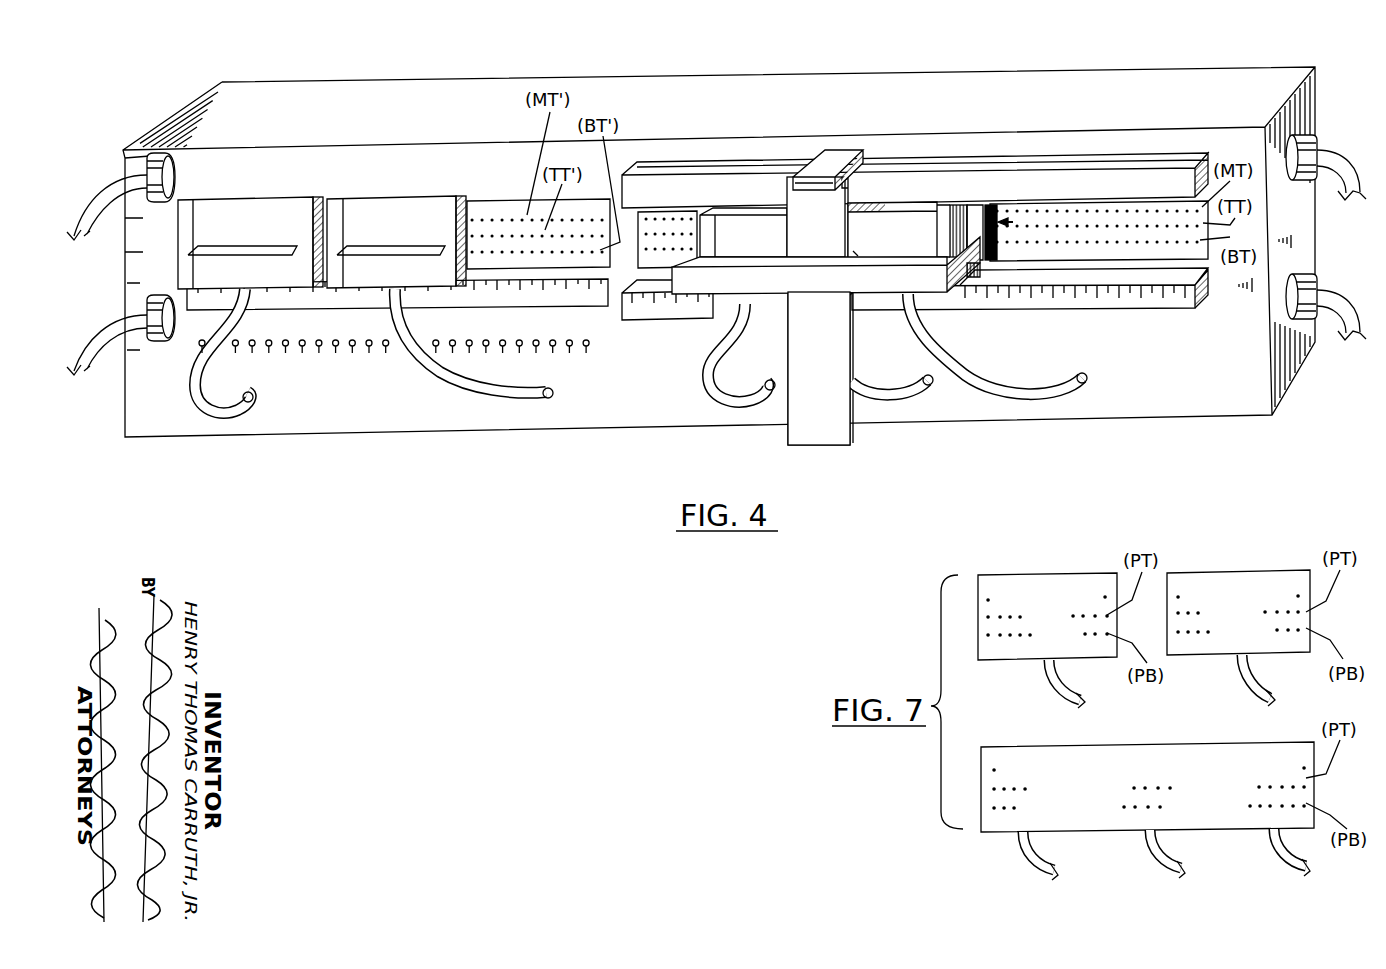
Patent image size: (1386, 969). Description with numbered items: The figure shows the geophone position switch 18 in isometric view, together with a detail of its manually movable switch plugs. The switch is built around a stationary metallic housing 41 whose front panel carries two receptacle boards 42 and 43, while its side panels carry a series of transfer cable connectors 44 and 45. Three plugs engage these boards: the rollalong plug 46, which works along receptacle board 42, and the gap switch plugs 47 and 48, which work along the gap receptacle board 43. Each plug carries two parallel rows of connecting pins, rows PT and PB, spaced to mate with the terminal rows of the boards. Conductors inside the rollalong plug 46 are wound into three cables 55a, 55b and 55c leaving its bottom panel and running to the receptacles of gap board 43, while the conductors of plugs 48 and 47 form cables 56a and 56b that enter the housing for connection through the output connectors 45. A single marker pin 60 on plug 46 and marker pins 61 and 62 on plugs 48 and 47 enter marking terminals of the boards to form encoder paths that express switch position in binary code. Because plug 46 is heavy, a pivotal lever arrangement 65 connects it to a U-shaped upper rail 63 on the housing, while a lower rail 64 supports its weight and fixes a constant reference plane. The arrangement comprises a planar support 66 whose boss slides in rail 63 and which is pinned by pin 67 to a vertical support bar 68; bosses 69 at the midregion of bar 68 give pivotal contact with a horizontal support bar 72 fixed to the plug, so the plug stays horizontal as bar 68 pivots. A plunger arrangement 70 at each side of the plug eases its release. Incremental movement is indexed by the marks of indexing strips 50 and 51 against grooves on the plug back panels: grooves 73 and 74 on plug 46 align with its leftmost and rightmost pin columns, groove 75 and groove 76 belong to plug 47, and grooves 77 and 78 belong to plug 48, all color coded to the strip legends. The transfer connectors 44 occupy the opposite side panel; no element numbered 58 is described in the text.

In FIG. 4, the geophone position switch 18 is at (1333, 100).
In FIG. 4, the stationary metallic housing 41 is at (1255, 280).
In FIG. 4, the receptacle board 42 is at (1095, 217).
In FIG. 4, the gap receptacle board 43 is at (495, 210).
In FIG. 4, the transfer cable connector 44 is at (1303, 172).
In FIG. 4, the transfer cable connector 45 is at (157, 170).
In FIG. 4, the rollalong plug 46 is at (885, 227).
In FIG. 7, the rollalong plug 46 is at (1129, 742).
In FIG. 4, the gap switch plug 47 is at (391, 218).
In FIG. 7, the gap switch plug 47 is at (1052, 578).
In FIG. 4, the gap switch plug 48 is at (245, 218).
In FIG. 7, the gap switch plug 48 is at (1233, 580).
In FIG. 4, the indexing strip 50 is at (1178, 297).
In FIG. 4, the indexing strip 51 is at (598, 307).
In FIG. 4, the cable 55a is at (710, 380).
In FIG. 7, the cable 55a is at (1272, 851).
In FIG. 4, the cable 55b is at (880, 383).
In FIG. 7, the cable 55b is at (1148, 851).
In FIG. 4, the cable 55c is at (985, 380).
In FIG. 7, the cable 55c is at (1021, 851).
In FIG. 4, the cable 56a is at (203, 370).
In FIG. 7, the cable 56a is at (1240, 683).
In FIG. 4, the cable 56b is at (430, 383).
In FIG. 7, the cable 56b is at (1052, 688).
In FIG. 4, the cable 58 is at (107, 176).
In FIG. 7, the marker pin 60 is at (1304, 764).
In FIG. 7, the marker pin 61 is at (1298, 593).
In FIG. 7, the marker pin 62 is at (990, 598).
In FIG. 4, the U-shaped upper rail 63 is at (1165, 160).
In FIG. 4, the lower rail 64 is at (1028, 268).
In FIG. 4, the pivotal lever arrangement 65 is at (861, 137).
In FIG. 4, the planar support 66 is at (830, 160).
In FIG. 4, the pin 67 is at (842, 184).
In FIG. 4, the vertical support bar 68 is at (832, 374).
In FIG. 4, the boss 69 is at (857, 255).
In FIG. 4, the plunger arrangement 70 is at (1015, 220).
In FIG. 4, the horizontal support bar 72 is at (765, 278).
In FIG. 4, the groove 73 is at (717, 232).
In FIG. 4, the groove 74 is at (940, 223).
In FIG. 4, the groove 75 is at (348, 221).
In FIG. 4, the groove 76 is at (459, 196).
In FIG. 4, the groove 77 is at (193, 225).
In FIG. 4, the groove 78 is at (304, 222).